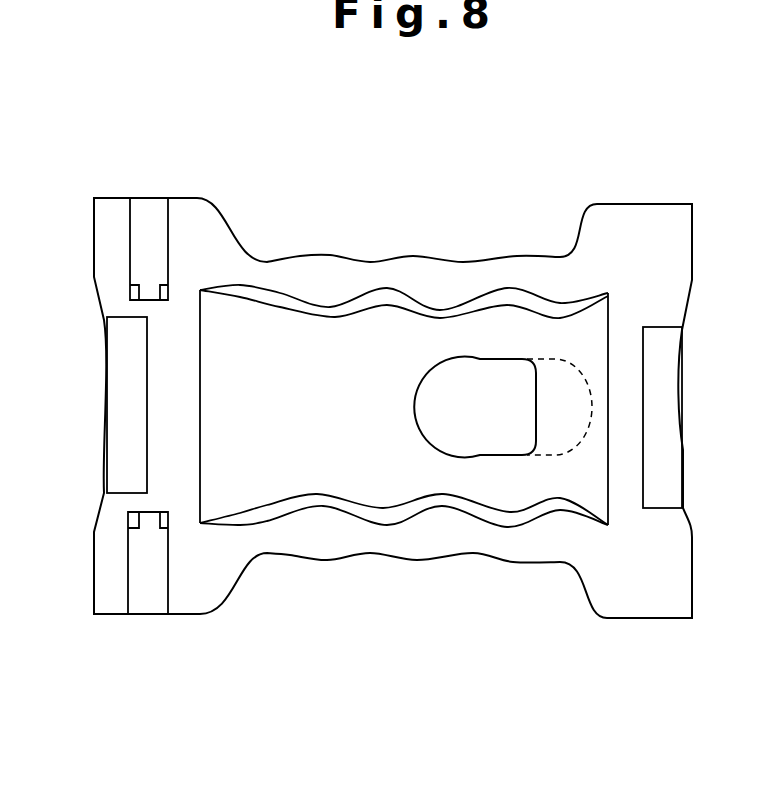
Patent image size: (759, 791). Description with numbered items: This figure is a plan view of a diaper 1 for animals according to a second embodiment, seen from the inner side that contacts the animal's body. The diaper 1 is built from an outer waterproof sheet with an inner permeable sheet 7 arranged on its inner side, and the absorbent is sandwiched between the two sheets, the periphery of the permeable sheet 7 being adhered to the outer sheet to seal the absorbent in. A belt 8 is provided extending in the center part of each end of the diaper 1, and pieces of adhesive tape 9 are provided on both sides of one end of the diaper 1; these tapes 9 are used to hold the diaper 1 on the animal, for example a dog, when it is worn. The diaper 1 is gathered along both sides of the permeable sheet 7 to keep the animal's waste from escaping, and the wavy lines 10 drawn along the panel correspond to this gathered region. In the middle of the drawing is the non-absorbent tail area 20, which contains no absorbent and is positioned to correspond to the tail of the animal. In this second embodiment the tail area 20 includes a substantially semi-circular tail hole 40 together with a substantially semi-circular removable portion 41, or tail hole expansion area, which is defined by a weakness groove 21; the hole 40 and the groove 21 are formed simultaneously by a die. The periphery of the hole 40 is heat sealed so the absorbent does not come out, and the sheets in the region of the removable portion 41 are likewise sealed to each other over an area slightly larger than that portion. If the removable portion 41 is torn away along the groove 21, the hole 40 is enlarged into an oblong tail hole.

The diaper 1 is at (504, 250).
The inner permeable sheet 7 is at (268, 493).
The belt 8 is at (108, 370).
The adhesive tape 9 is at (148, 207).
The waist elastic member 10 is at (277, 297).
The non-absorbent tail area 20 is at (483, 475).
The weakness groove 21 is at (587, 422).
The tail hole 40 is at (446, 400).
The removable portion 41 is at (558, 383).